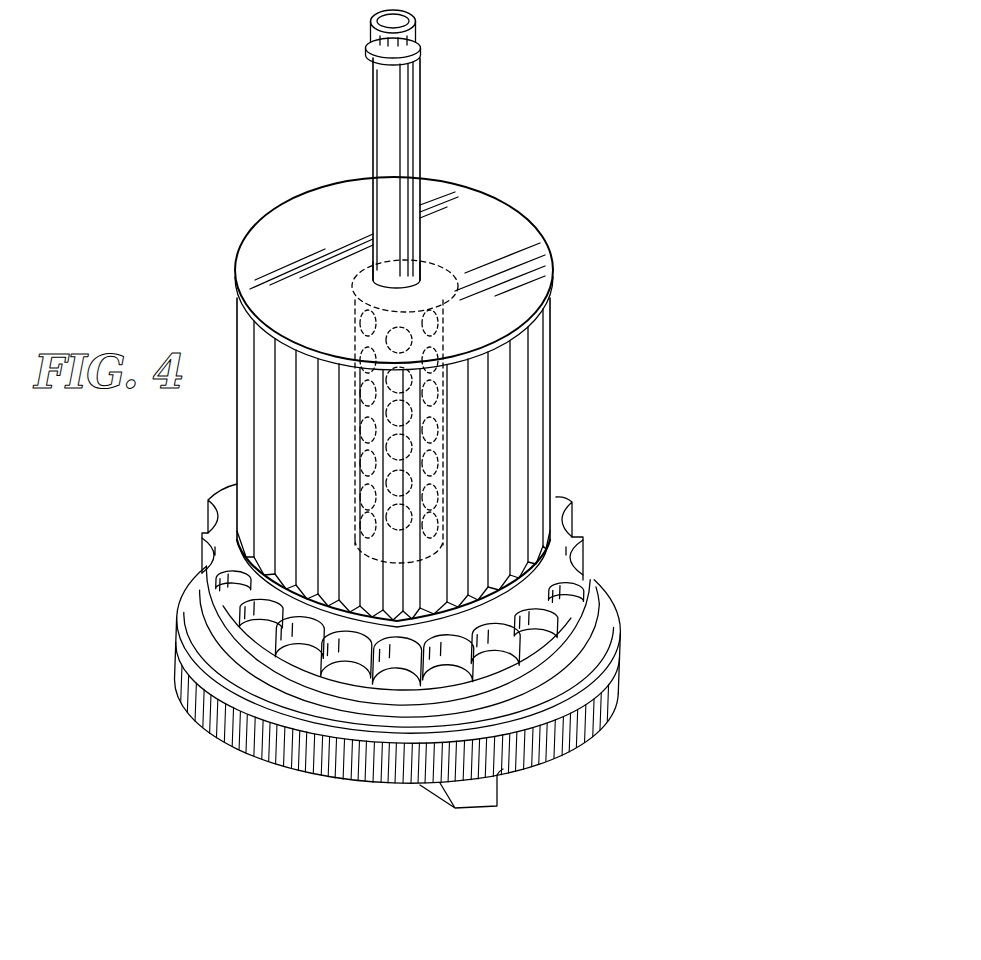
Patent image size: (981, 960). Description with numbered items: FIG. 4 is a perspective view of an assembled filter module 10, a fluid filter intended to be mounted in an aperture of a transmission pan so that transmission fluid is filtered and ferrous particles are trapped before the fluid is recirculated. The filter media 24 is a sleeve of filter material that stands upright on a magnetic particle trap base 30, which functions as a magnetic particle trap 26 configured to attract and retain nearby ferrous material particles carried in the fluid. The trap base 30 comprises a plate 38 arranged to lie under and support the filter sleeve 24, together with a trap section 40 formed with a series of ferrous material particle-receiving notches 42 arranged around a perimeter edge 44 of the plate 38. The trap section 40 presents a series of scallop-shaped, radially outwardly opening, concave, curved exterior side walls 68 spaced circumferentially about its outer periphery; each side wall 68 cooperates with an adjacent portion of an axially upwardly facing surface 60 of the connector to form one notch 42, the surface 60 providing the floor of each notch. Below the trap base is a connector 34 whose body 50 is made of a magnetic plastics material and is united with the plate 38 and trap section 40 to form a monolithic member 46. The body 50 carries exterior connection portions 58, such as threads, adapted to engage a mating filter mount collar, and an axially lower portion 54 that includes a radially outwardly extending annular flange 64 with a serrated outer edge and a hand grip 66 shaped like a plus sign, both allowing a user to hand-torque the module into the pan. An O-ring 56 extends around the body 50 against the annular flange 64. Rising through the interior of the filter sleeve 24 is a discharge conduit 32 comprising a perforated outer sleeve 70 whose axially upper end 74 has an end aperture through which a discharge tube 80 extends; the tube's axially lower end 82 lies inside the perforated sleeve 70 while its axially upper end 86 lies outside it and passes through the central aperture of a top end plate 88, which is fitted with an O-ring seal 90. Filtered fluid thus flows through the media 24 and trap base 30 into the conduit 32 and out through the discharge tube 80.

The filter module 10 is at (600, 192).
The filter media 24 is at (558, 423).
The magnetic particle trap 26 is at (595, 537).
The magnetic particle trap base 30 is at (207, 496).
The discharge conduit 32 is at (428, 145).
The connector 34 is at (175, 613).
The plate 38 is at (437, 612).
The trap section 40 is at (585, 552).
The ferrous material particle-receiving notches 42 is at (200, 560).
The perimeter edge 44 is at (462, 600).
The monolithic member 46 is at (617, 570).
The body 50 is at (170, 642).
The axially lower portion 54 is at (533, 772).
The O-ring 56 is at (575, 657).
The exterior connection portions 58 is at (250, 667).
The axially upwardly facing surface 60 is at (353, 670).
The annular flange 64 is at (262, 750).
The hand grip 66 is at (483, 790).
The exterior side walls 68 is at (255, 718).
The perforated outer sleeve 70 is at (352, 333).
The axially upper end 74 is at (418, 265).
The discharge tube 80 is at (422, 236).
The axially lower end 82 is at (438, 288).
The axially upper end 86 is at (388, 136).
The top end plate 88 is at (283, 230).
The O-ring seal 90 is at (367, 53).